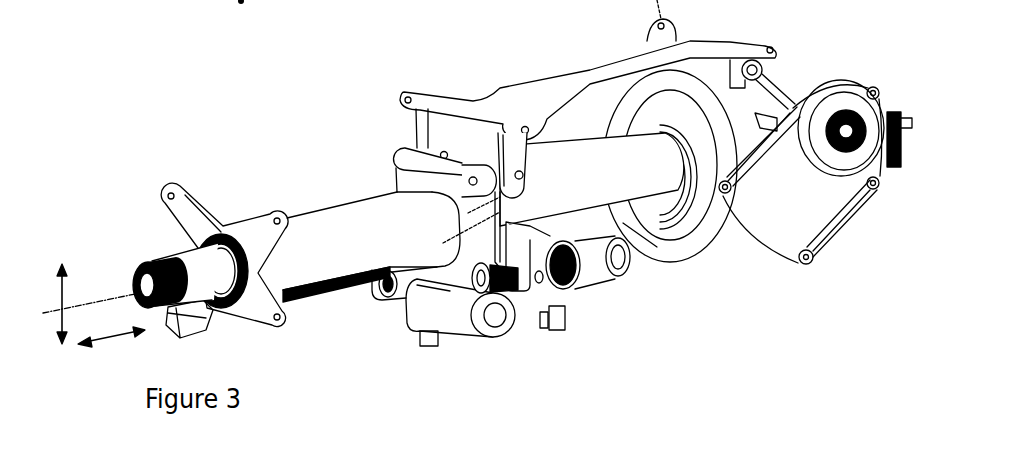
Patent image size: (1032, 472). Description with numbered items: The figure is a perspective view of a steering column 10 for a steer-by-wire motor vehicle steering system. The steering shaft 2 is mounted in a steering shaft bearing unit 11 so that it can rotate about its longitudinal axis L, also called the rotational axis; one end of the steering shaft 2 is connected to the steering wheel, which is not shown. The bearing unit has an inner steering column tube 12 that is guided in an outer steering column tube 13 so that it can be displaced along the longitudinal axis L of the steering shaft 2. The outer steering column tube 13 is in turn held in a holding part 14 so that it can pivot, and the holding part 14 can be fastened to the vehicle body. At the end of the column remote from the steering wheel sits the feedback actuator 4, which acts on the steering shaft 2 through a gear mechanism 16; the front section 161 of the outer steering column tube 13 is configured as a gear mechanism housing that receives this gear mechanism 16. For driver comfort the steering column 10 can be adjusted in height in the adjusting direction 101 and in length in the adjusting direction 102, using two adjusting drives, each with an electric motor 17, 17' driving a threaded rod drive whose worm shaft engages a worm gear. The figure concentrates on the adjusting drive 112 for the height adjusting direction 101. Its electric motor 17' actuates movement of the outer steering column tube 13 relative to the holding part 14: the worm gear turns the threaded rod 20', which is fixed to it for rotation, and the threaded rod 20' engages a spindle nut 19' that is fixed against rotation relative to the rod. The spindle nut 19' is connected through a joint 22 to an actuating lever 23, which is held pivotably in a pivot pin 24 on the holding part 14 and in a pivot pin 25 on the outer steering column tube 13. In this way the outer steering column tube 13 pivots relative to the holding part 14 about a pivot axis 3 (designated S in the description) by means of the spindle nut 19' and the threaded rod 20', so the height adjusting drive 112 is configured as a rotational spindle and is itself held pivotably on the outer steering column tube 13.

The steering shaft 2 is at (193, 262).
The pivot joint 3 is at (763, 72).
The feedback actuator 4 is at (843, 50).
The steering column 10 is at (338, 107).
The steering shaft bearing unit 11 is at (380, 183).
The inner steering column tube 12 is at (298, 277).
The outer steering column tube 13 is at (593, 157).
The holding part 14 is at (480, 110).
The gear mechanism 16 is at (768, 44).
The electric motor 17 is at (460, 340).
The electric motor 17' is at (549, 354).
The spindle nut 19' is at (588, 319).
The threaded rod 20' is at (498, 332).
The joint 22 is at (540, 290).
The actuating lever 23 is at (447, 294).
The pivot pin 24 is at (412, 283).
The pivot pin 25 is at (466, 165).
The adjusting direction 101 is at (58, 289).
The adjusting direction 102 is at (110, 344).
The adjusting drive 112 is at (577, 312).
The front section 161 is at (697, 225).
The longitudinal axis L is at (97, 300).